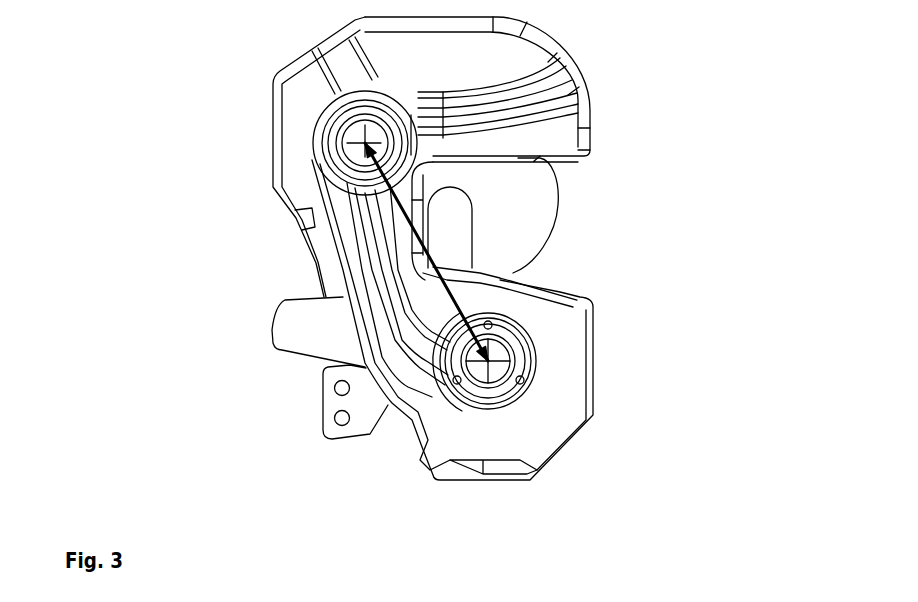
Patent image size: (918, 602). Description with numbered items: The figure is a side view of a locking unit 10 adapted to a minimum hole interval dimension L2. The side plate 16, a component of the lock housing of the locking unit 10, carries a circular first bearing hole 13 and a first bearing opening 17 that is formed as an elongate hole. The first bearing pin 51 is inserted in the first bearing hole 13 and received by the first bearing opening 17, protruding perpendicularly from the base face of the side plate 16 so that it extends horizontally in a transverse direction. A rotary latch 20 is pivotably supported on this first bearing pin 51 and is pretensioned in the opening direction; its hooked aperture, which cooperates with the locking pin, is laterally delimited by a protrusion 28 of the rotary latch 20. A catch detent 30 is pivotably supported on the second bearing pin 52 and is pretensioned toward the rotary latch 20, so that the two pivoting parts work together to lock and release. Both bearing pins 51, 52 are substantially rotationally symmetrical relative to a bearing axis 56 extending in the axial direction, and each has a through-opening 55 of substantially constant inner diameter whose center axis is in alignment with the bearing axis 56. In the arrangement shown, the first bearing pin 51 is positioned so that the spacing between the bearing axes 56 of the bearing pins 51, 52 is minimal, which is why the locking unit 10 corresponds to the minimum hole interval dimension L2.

The locking unit 10 is at (162, 423).
The first bearing hole 13 is at (478, 372).
The side plate 16 is at (518, 70).
The first bearing opening 17 is at (360, 112).
The rotary latch 20 is at (518, 187).
The protrusion 28 is at (508, 233).
The catch detent 30 is at (347, 377).
The first bearing pin 51 is at (347, 128).
The second bearing pin 52 is at (508, 345).
The through-opening 55 is at (372, 128).
The bearing axis 56 is at (362, 143).
The minimum hole interval dimension L2 is at (393, 193).